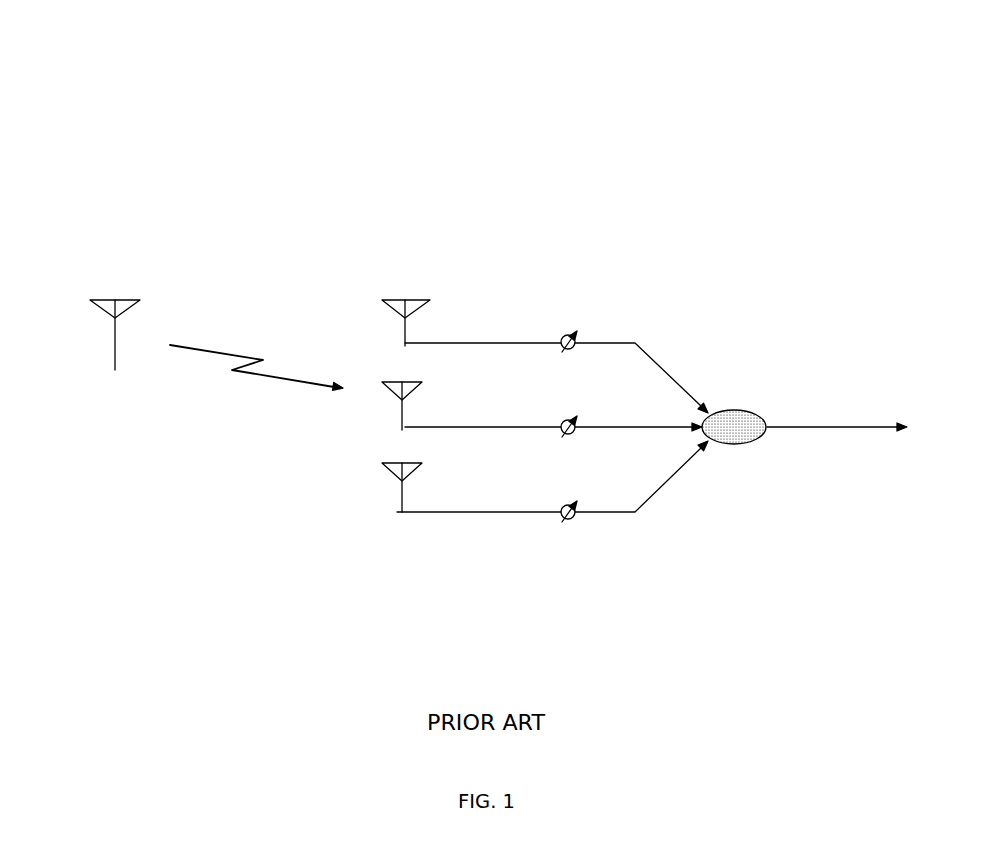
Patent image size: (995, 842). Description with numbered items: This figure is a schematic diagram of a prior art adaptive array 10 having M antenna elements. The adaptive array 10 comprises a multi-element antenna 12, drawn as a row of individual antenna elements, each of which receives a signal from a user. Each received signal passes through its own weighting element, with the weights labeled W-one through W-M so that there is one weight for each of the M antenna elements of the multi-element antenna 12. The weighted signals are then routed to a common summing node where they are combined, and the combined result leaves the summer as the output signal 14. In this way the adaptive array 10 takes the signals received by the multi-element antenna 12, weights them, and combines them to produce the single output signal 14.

The adaptive array 10 is at (486, 317).
The multi-element antenna 12 is at (387, 306).
The output signal 14 is at (837, 419).